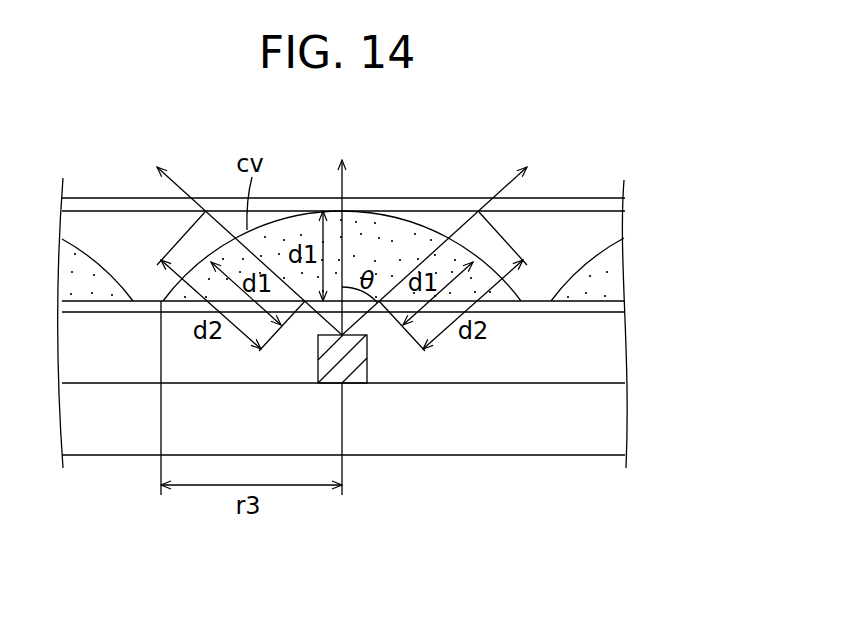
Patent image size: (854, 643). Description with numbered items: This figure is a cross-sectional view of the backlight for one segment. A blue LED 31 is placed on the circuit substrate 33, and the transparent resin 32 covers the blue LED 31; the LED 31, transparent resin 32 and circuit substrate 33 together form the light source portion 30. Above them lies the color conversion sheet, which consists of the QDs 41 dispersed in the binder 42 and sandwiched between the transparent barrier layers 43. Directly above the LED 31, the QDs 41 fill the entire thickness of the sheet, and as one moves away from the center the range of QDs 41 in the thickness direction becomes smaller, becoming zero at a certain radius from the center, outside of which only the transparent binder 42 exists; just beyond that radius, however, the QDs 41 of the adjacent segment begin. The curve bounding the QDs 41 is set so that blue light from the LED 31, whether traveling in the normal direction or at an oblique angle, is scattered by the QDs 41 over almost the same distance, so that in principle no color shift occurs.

The light emitting substrate 30 is at (537, 512).
The blue LED 31 is at (358, 368).
The transparent resin 32 is at (452, 367).
The circuit substrate 33 is at (508, 442).
The QDs 41 is at (406, 235).
The binder 42 is at (357, 235).
The transparent barrier layers 43 is at (613, 205).